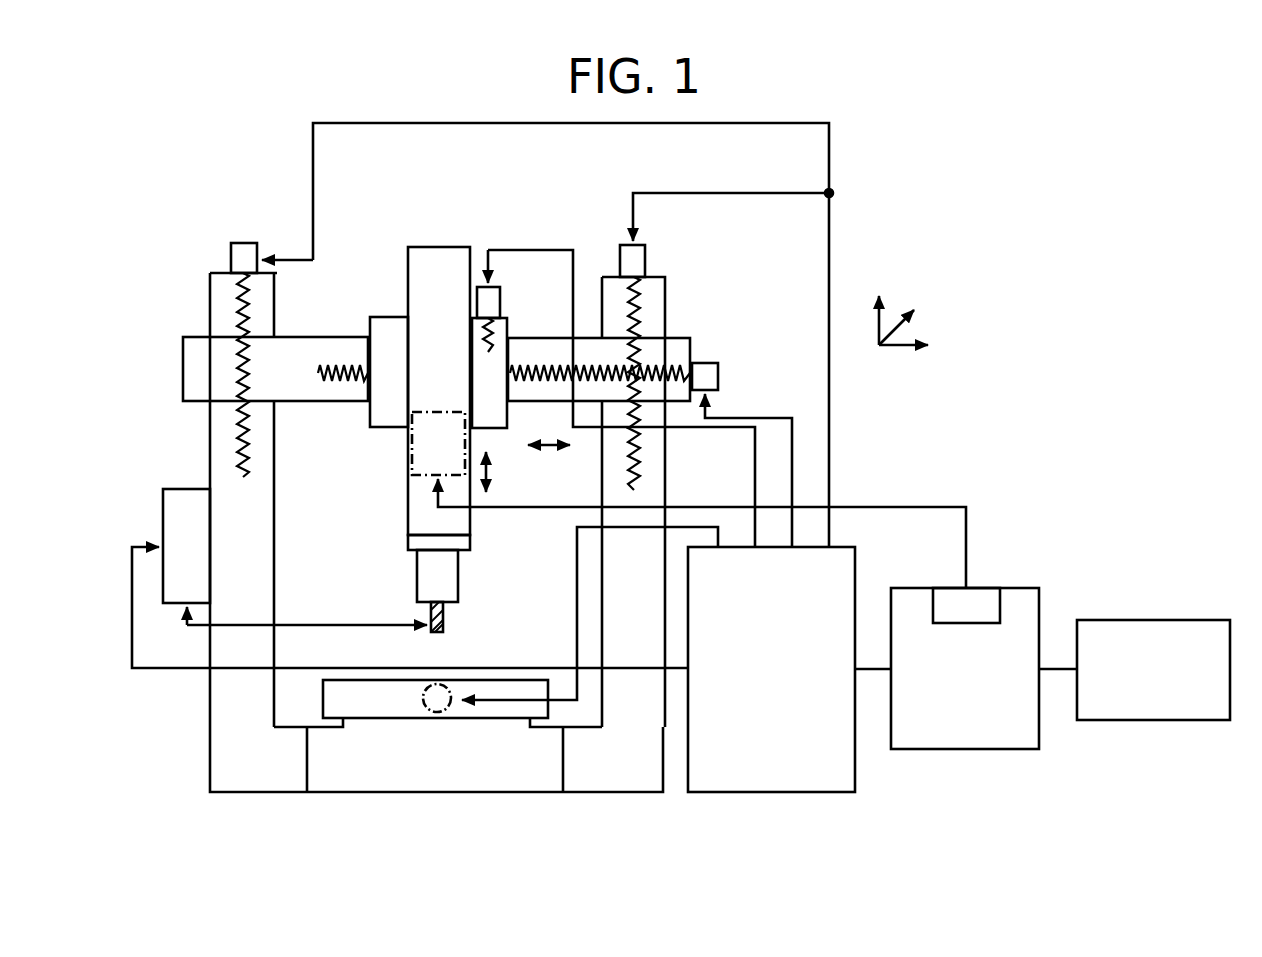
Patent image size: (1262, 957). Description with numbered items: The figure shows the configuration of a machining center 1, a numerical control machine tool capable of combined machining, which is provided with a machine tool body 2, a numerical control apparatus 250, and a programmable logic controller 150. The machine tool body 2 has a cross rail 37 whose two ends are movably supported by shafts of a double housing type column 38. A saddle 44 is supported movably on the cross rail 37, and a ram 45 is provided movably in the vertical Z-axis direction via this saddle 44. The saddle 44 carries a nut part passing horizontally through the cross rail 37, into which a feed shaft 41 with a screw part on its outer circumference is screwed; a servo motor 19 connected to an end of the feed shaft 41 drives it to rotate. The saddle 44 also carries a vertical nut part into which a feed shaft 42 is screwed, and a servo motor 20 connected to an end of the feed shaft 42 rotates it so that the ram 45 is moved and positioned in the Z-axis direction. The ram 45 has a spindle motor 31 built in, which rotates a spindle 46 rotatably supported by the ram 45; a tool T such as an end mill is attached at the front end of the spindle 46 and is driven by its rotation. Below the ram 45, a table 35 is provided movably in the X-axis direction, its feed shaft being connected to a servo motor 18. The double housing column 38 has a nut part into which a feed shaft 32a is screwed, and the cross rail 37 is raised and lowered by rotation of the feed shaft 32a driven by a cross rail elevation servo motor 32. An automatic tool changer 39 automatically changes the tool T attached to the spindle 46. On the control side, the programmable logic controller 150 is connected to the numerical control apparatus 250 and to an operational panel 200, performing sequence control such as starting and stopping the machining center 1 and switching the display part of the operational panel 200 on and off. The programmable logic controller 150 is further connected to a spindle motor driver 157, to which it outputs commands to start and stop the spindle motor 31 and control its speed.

The machining center 1 is at (844, 898).
The machine tool body 2 is at (262, 808).
The servo motor 18 is at (428, 712).
The servo motor 19 is at (718, 375).
The servo motor 20 is at (500, 300).
The spindle motor 31 is at (410, 459).
The cross rail elevation servo motor 32 is at (244, 243).
The feed shaft 32a is at (242, 302).
The table 35 is at (497, 700).
The cross rail 37 is at (183, 356).
The double housing type column 38 is at (211, 432).
The automatic tool changer 39 is at (180, 489).
The feed shaft 41 is at (676, 360).
The feed shaft 42 is at (507, 342).
The saddle 44 is at (402, 318).
The ram 45 is at (408, 528).
The spindle 46 is at (458, 578).
The tool T is at (443, 613).
The programmable logic controller 150 is at (1040, 735).
The spindle motor driver 157 is at (1002, 606).
The operational panel 200 is at (1196, 620).
The numerical control apparatus 250 is at (808, 792).